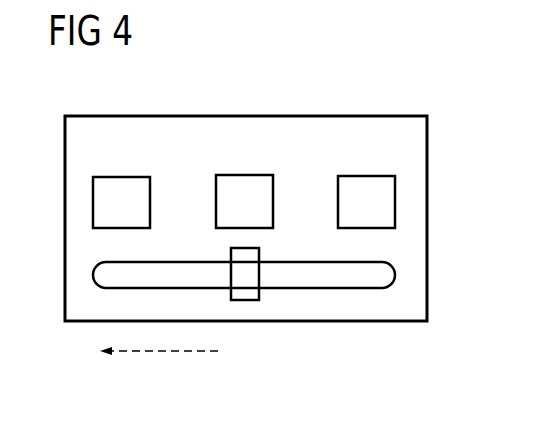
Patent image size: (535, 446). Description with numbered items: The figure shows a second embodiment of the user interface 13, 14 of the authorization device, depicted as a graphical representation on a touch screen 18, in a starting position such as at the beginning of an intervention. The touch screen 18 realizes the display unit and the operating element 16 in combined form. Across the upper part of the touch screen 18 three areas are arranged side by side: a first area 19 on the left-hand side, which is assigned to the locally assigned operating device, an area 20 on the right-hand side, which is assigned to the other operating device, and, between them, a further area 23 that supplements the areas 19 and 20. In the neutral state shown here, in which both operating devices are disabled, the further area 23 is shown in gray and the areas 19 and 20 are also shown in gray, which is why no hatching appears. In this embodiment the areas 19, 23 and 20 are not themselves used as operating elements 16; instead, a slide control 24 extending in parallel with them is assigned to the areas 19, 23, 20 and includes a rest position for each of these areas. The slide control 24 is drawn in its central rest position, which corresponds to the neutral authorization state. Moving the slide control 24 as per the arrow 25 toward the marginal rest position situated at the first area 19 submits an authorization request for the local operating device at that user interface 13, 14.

The first user interface 13 is at (283, 202).
The second user interface 14 is at (283, 202).
The operating element 16 is at (404, 272).
The touch screen 18 is at (427, 198).
The first area 19 is at (125, 177).
The area 20 is at (370, 176).
The further area 23 is at (242, 175).
The slide control 24 is at (245, 300).
The arrow 25 is at (138, 353).